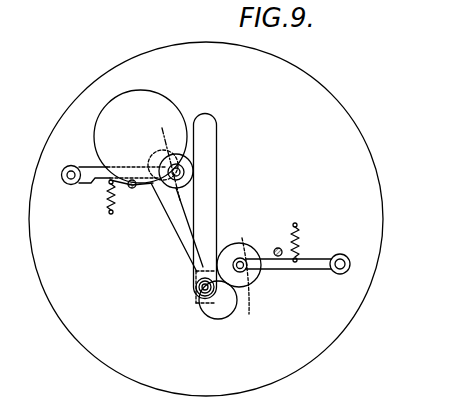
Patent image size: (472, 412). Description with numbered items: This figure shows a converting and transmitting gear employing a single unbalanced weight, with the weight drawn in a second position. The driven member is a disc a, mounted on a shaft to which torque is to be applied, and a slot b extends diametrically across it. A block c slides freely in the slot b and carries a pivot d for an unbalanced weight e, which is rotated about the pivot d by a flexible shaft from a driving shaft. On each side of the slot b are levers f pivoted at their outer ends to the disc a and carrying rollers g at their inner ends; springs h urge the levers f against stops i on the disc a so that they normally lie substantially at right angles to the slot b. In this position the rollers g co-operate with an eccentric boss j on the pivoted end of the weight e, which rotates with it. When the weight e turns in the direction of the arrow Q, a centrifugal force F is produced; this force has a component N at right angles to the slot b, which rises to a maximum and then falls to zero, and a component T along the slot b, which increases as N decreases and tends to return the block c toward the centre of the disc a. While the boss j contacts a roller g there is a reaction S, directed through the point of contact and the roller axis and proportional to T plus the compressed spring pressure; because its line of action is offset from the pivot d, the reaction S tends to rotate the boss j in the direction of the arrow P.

The disc a is at (352, 139).
The slot b is at (213, 133).
The block c is at (207, 277).
The pivot d is at (188, 293).
The unbalanced weight e is at (148, 96).
The levers f is at (88, 184).
The rollers g is at (153, 188).
The springs h is at (303, 241).
The stops i is at (279, 248).
The eccentric boss j is at (216, 321).
The centrifugal force F is at (135, 132).
The direction of rotation of the weight Q is at (175, 102).
The component of centrifugal force along the slot T is at (204, 267).
The component of centrifugal force at right angles to the slot N is at (200, 287).
The direction of rotation of the eccentric boss P is at (197, 318).
The reaction S is at (197, 319).